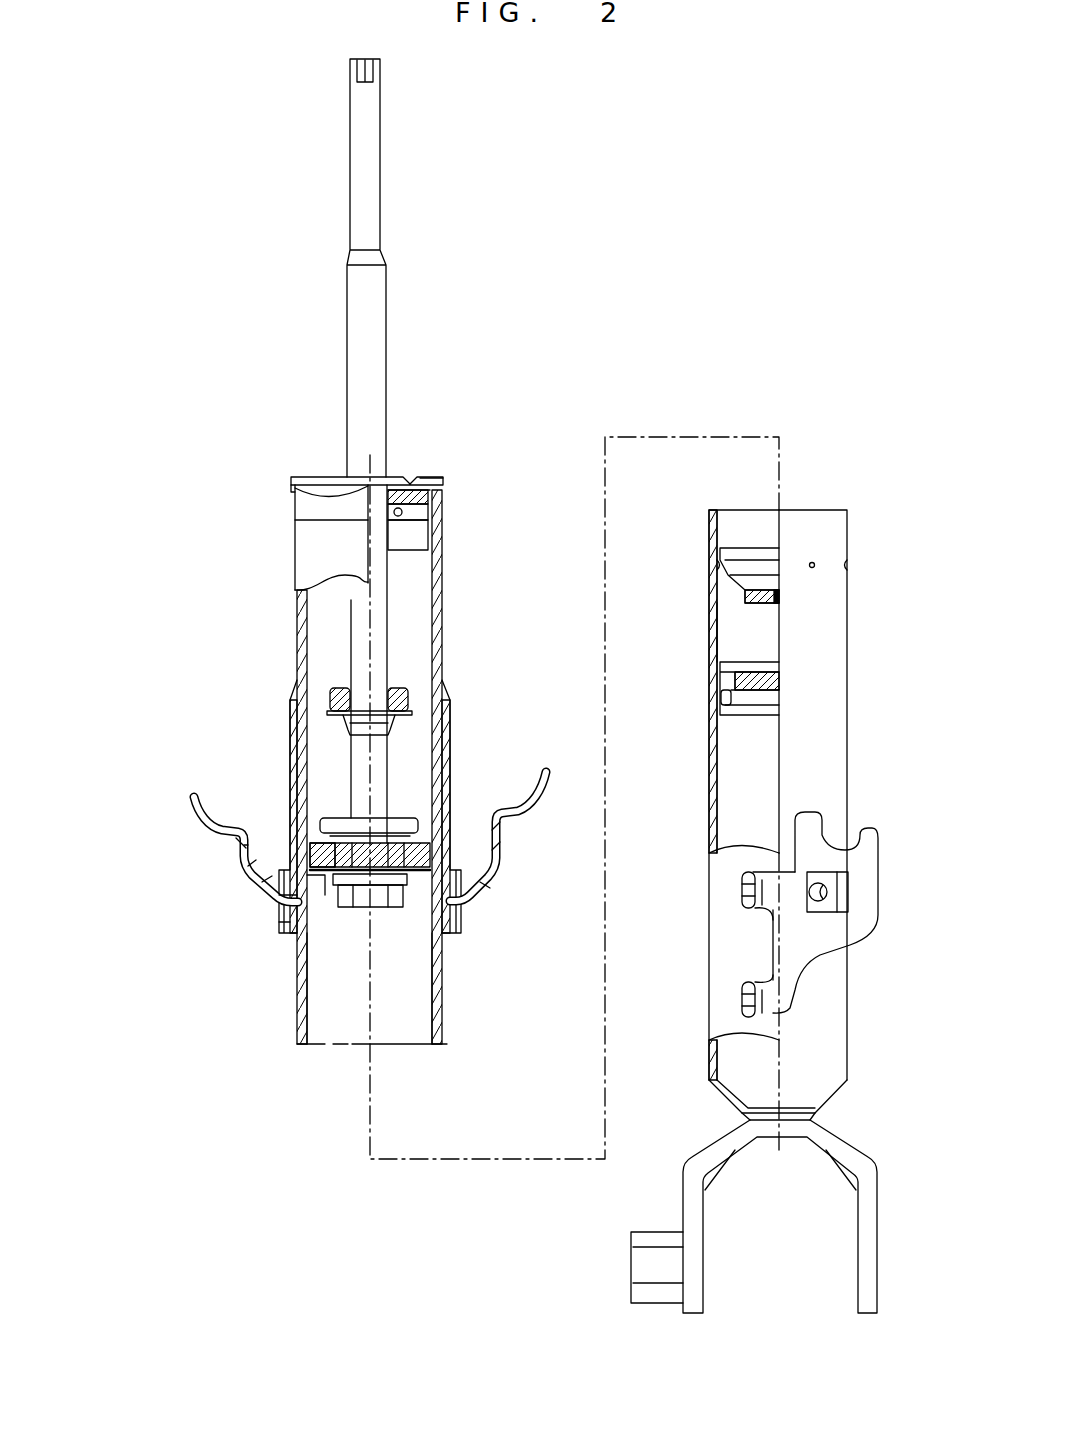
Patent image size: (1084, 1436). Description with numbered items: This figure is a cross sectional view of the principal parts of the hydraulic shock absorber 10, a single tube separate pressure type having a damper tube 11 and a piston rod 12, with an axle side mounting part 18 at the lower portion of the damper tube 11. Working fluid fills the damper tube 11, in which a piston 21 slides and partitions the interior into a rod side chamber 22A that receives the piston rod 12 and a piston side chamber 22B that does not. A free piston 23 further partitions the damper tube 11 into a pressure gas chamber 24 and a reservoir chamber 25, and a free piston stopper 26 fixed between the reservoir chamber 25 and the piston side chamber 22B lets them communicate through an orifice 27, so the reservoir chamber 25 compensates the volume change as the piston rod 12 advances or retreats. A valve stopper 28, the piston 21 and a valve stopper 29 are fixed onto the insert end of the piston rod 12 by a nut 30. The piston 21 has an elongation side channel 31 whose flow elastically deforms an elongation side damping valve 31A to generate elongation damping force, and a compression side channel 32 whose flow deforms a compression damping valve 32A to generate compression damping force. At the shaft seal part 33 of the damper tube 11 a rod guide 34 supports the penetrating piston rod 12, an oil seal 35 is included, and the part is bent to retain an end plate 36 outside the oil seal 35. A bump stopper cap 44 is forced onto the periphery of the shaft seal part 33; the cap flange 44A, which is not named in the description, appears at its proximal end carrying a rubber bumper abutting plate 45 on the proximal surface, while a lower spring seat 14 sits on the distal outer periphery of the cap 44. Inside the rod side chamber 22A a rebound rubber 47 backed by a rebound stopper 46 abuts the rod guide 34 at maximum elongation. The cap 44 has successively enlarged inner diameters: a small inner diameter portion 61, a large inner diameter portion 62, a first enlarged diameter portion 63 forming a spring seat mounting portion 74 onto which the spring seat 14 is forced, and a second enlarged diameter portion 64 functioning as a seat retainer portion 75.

The hydraulic shock absorber 10 is at (207, 188).
The damper tube 11 is at (300, 1025).
The piston rod 12 is at (340, 292).
The lower spring seat 14 is at (195, 800).
The axle side mounting part 18 is at (683, 1200).
The piston 21 is at (445, 882).
The rod side chamber 22A is at (412, 732).
The piston side chamber 22B is at (418, 1005).
The free piston 23 is at (722, 705).
The pressure gas chamber 24 is at (730, 800).
The reservoir chamber 25 is at (730, 632).
The free piston stopper 26 is at (748, 598).
The orifice 27 is at (782, 600).
The valve stopper 28 is at (395, 815).
The valve stopper 29 is at (410, 887).
The nut 30 is at (398, 910).
The elongation side channel 31 is at (325, 850).
The elongation side damping valve 31A is at (320, 885).
The compression side channel 32 is at (400, 855).
The compression damping valve 32A is at (437, 815).
The shaft seal part 33 is at (414, 470).
The rod guide 34 is at (418, 547).
The oil seal 35 is at (400, 512).
The end plate 36 is at (400, 490).
The bump stopper cap 44 is at (300, 553).
The dust cover flange 44A is at (292, 478).
The rubber bumper abutting plate 45 is at (432, 478).
The rebound stopper 46 is at (335, 725).
The rebound rubber 47 is at (332, 692).
The small inner diameter portion 61 is at (294, 492).
The large inner diameter portion 62 is at (300, 625).
The first enlarged diameter portion 63 is at (328, 712).
The second enlarged diameter portion 64 is at (289, 922).
The spring seat mounting portion 74 is at (265, 843).
The seat retainer portion 75 is at (292, 905).